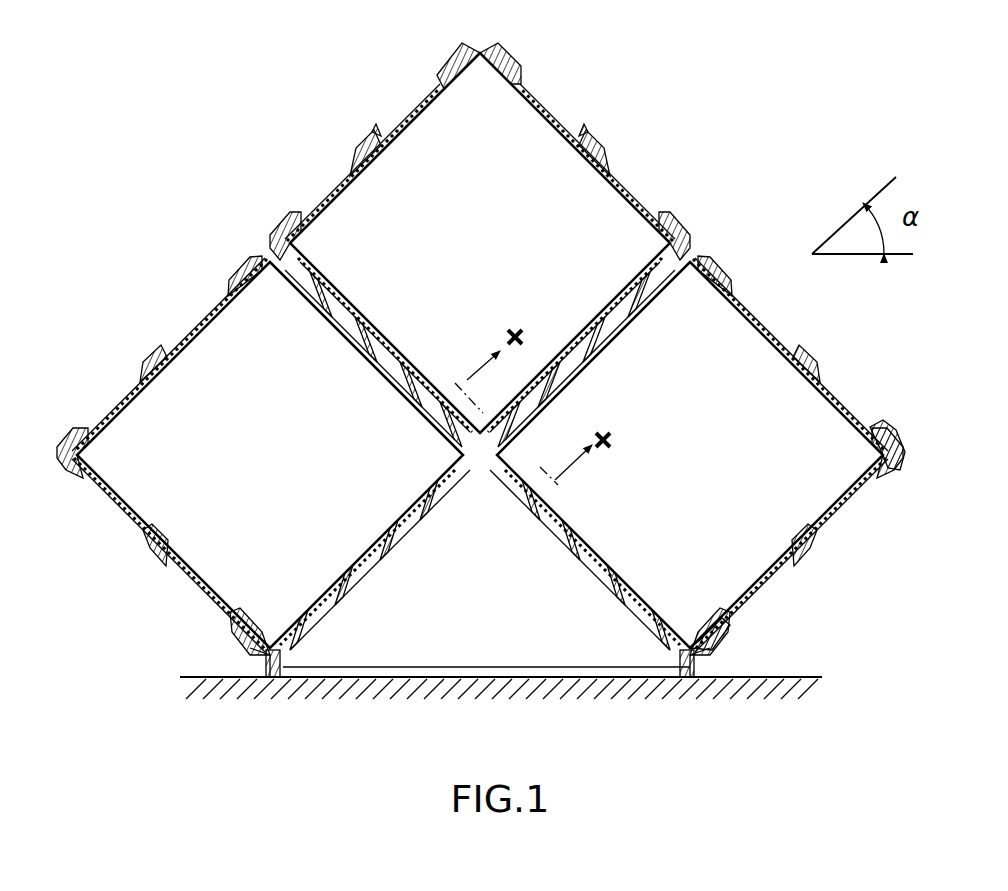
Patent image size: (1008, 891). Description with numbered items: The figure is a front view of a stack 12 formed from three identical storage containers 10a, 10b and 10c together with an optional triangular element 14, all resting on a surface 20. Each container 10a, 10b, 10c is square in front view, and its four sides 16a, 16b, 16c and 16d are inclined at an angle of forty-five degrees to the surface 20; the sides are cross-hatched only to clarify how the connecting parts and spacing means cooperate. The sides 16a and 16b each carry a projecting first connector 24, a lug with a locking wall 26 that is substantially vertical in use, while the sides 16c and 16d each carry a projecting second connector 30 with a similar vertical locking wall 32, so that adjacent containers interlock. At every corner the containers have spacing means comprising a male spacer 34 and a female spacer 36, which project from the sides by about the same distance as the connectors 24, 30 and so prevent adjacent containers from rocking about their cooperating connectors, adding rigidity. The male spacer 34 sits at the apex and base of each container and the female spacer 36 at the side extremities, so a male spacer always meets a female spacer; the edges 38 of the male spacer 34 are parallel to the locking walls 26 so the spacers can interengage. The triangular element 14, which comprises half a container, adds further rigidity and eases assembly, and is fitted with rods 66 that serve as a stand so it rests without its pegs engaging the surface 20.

The container 10a is at (246, 477).
The container 10b is at (712, 477).
The container 10c is at (470, 258).
The stack 12 is at (760, 162).
The triangular element 14 is at (480, 610).
The side 16a is at (557, 132).
The side 16b is at (402, 132).
The side 16c is at (400, 357).
The side 16d is at (568, 352).
The surface 20 is at (790, 676).
The first connector 24 is at (352, 165).
The locking wall 26 is at (378, 131).
The second connector 30 is at (141, 544).
The locking wall 32 is at (168, 572).
The male spacer 34 is at (505, 52).
The female spacer 36 is at (280, 224).
The edges of the male spacer 38 is at (440, 76).
The rods 66 is at (278, 680).